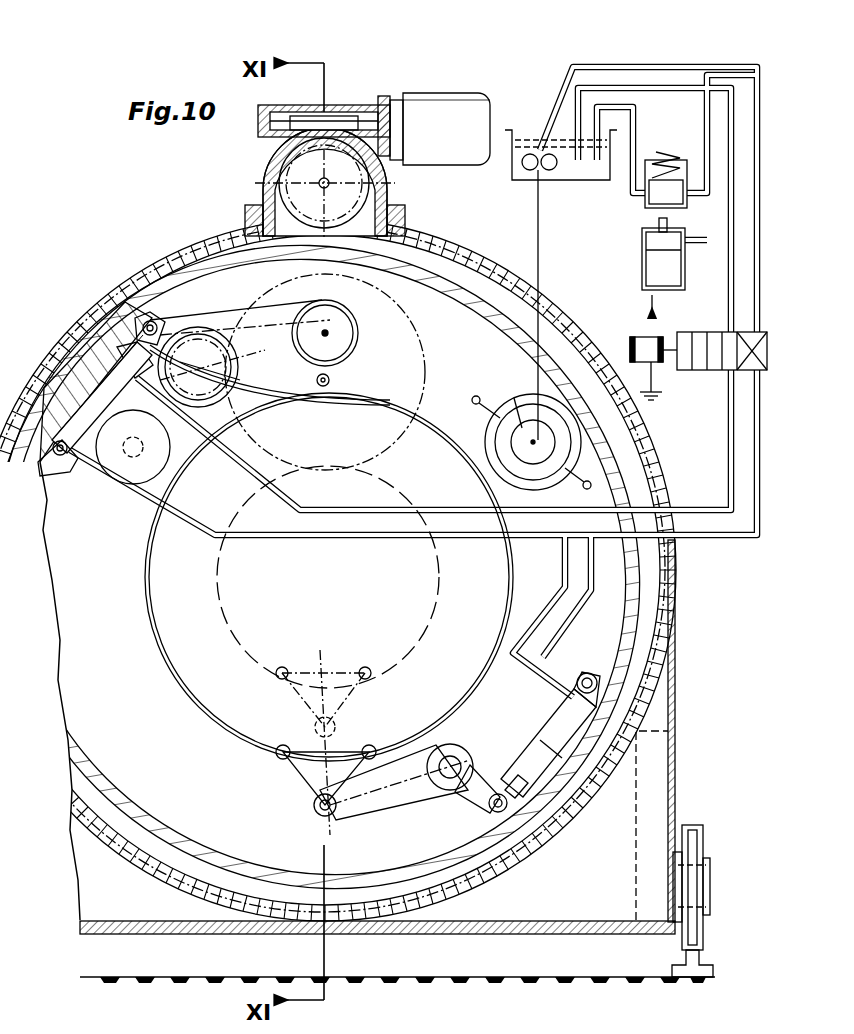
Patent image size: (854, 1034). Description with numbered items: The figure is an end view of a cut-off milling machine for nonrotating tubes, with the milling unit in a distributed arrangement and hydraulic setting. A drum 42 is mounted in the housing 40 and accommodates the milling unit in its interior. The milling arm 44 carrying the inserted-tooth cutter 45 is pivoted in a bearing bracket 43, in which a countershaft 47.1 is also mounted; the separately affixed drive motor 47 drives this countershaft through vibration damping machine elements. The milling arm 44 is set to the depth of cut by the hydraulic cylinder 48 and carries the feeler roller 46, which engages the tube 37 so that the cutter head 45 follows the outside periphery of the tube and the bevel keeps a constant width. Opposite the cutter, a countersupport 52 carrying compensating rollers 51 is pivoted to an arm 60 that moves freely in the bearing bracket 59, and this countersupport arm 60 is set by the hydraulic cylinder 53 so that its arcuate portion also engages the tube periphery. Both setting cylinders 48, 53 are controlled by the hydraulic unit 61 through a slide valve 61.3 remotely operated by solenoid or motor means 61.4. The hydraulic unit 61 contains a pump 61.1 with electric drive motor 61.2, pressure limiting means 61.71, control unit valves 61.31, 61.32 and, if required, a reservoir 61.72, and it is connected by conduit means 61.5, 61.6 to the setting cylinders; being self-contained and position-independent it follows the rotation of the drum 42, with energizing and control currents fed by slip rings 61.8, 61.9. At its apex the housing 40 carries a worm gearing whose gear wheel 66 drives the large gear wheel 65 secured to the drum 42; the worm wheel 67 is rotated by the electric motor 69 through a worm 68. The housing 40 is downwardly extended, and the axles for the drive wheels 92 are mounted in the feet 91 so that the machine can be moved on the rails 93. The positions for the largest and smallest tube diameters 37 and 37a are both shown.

The tube 37 is at (512, 574).
The tube of smallest diameter 37a is at (434, 575).
The housing 40 is at (492, 266).
The drum 42 is at (536, 295).
The bearing bracket 43 is at (185, 305).
The milling arm 44 is at (247, 322).
The inserted-tooth cutter 45 is at (368, 296).
The feeler roller 46 is at (338, 383).
The drive motor 47 is at (130, 465).
The countershaft 47.1 is at (160, 300).
The hydraulic cylinder 48 is at (98, 395).
The compensating rollers 51 is at (385, 750).
The countersupport 52 is at (305, 772).
The hydraulic cylinder 53 is at (556, 730).
The bearing bracket 59 is at (452, 815).
The arm 60 is at (395, 797).
The hydraulic unit 61 is at (605, 241).
The pump 61.1 is at (522, 168).
The electric drive motor 61.2 is at (520, 430).
The slide valve 61.3 is at (712, 332).
The control unit valve 61.31 is at (714, 371).
The control unit valve 61.32 is at (738, 398).
The solenoid or motor means 61.4 is at (644, 341).
The conduit means 61.5 is at (707, 509).
The conduit means 61.6 is at (730, 537).
The pressure limiting means 61.71 is at (666, 168).
The reservoir 61.72 is at (656, 268).
The slip ring 61.8 is at (471, 399).
The slip ring 61.9 is at (592, 489).
The large gear wheel 65 is at (430, 254).
The gear wheel 66 is at (268, 160).
The worm wheel 67 is at (262, 186).
The worm 68 is at (347, 128).
The electric motor 69 is at (490, 105).
The feet 91 is at (668, 802).
The drive wheels 92 is at (682, 940).
The rails 93 is at (690, 968).